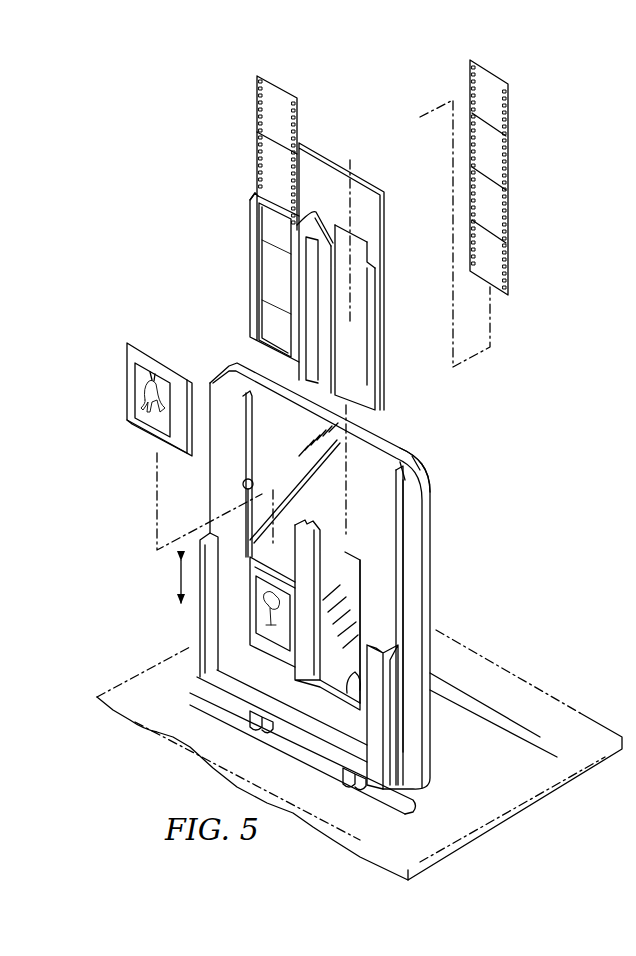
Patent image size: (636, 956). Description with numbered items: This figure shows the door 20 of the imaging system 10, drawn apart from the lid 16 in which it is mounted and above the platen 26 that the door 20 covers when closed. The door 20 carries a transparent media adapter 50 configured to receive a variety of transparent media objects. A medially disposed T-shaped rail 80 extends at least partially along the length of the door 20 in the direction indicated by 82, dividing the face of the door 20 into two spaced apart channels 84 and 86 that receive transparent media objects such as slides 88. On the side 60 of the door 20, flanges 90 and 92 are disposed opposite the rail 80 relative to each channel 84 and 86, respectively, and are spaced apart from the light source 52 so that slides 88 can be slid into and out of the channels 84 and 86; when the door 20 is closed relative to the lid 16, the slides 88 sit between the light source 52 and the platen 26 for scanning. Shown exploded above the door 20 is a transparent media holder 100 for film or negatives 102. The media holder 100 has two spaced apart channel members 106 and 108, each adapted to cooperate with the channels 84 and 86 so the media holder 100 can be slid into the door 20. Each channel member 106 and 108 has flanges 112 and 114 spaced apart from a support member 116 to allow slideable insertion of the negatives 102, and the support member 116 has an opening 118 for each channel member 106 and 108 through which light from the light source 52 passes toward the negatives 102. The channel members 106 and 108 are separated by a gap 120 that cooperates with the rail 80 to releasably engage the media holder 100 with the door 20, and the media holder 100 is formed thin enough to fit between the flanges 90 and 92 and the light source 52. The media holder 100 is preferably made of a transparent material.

The imaging system 10 is at (538, 672).
The lid 16 is at (492, 781).
The door 20 is at (432, 508).
The platen 26 is at (350, 828).
The transparent media adapter 50 is at (375, 609).
The light source 52 is at (356, 452).
The side 60 is at (385, 574).
The T-shaped rail 80 is at (318, 555).
The direction 82 is at (178, 580).
The channel 84 is at (347, 560).
The channel 86 is at (280, 526).
The slide 88 is at (125, 388).
The flange 90 is at (348, 700).
The flange 92 is at (243, 483).
The transparent media holder 100 is at (240, 212).
The negatives 102 is at (258, 146).
The channel member 106 is at (351, 345).
The channel member 108 is at (283, 322).
The flange 112 is at (252, 238).
The flange 114 is at (322, 286).
The support member 116 is at (316, 146).
The opening 118 is at (357, 228).
The gap 120 is at (310, 385).